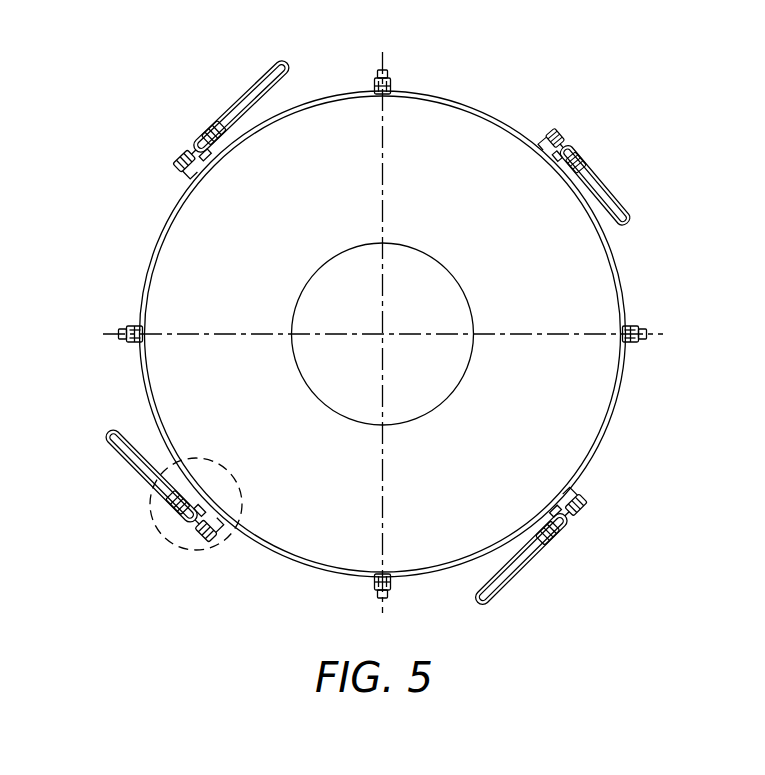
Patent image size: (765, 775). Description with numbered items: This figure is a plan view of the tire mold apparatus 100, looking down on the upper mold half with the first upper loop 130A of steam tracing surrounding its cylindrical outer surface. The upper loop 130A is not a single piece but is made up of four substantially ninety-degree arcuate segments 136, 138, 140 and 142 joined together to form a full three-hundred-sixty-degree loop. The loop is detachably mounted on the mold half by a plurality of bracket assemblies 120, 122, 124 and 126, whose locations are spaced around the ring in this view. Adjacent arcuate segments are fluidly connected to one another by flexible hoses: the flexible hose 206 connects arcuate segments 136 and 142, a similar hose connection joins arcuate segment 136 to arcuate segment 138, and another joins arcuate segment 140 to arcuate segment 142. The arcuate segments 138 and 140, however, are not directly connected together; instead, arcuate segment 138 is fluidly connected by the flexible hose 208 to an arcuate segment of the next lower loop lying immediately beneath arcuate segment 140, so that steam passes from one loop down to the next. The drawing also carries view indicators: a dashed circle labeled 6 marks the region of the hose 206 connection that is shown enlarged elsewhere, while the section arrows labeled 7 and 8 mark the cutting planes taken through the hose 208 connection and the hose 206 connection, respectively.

The tire mold apparatus 100 is at (519, 63).
The first upper loop 130A is at (300, 103).
The arcuate segment 140 is at (345, 93).
The arcuate segment 142 is at (168, 218).
The arcuate segment 138 is at (622, 367).
The arcuate segment 136 is at (345, 578).
The bracket assembly 120 is at (391, 592).
The bracket assembly 122 is at (638, 327).
The bracket assembly 124 is at (392, 80).
The bracket assembly 126 is at (128, 327).
The flexible hose 206 is at (130, 468).
The flexible hose 208 is at (584, 152).
The detail view indicator 6 is at (152, 508).
The section line 7- 7 is at (593, 119).
The section line 8- 8 is at (95, 475).